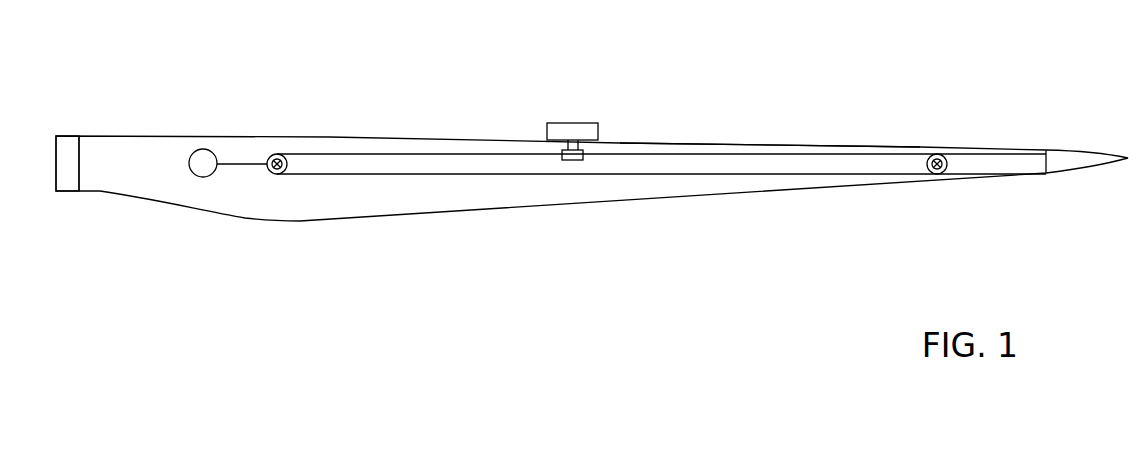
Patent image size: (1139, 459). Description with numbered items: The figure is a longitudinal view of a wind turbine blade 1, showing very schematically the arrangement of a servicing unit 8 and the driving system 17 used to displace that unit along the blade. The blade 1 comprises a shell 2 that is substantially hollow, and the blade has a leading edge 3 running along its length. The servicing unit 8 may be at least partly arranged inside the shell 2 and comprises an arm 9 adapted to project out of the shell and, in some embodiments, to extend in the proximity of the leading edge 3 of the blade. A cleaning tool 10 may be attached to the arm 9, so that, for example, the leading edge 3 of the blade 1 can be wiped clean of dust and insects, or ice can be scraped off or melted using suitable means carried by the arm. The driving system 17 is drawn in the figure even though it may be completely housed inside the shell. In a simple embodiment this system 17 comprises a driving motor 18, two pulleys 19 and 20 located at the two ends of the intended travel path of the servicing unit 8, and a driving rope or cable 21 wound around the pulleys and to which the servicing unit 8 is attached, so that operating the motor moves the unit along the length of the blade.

The wind turbine blade 1 is at (472, 257).
The shell 2 is at (137, 158).
The leading edge 3 is at (783, 142).
The servicing unit 8 is at (578, 155).
The arm 9 is at (572, 142).
The cleaning tool 10 is at (595, 131).
The driving system 17 is at (253, 178).
The driving motor 18 is at (198, 178).
The pulley 19 is at (274, 155).
The pulley 20 is at (947, 158).
The driving rope or cable 21 is at (488, 155).